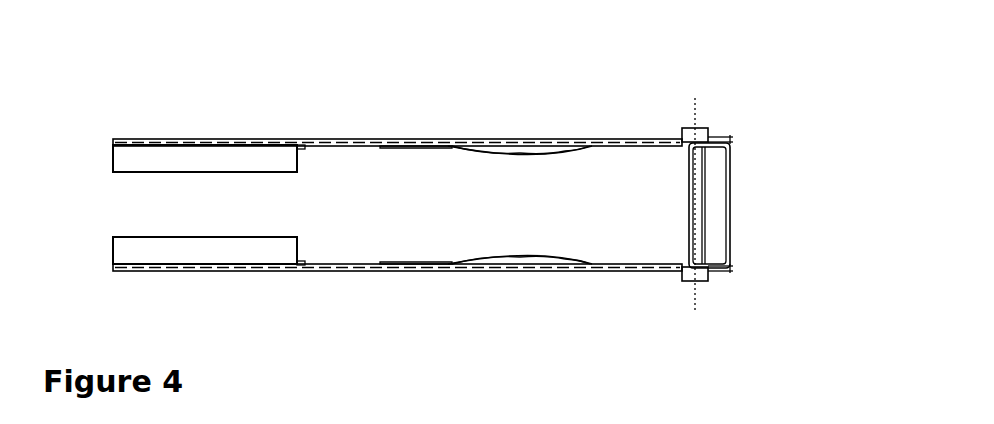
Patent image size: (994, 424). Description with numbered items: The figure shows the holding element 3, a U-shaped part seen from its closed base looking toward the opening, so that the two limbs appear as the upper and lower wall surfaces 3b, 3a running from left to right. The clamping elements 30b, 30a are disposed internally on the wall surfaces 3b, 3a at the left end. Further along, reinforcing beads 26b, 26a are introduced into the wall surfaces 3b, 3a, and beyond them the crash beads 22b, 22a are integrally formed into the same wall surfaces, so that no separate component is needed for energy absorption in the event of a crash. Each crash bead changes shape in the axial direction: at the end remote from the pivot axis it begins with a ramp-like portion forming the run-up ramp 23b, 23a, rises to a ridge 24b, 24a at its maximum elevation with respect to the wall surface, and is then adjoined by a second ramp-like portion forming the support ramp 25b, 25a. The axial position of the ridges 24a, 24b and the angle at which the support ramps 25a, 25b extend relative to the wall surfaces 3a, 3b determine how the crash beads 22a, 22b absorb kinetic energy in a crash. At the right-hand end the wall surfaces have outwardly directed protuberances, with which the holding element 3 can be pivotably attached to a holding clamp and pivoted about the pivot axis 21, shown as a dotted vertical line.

The holding element 3 is at (385, 82).
The wall surface 3a is at (317, 272).
The wall surface 3b is at (322, 140).
The pivot axis 21 is at (697, 110).
The crash bead 22a is at (523, 263).
The crash bead 22b is at (511, 141).
The run-up ramp 23a is at (470, 259).
The run-up ramp 23b is at (467, 152).
The ridge 24a is at (537, 258).
The ridge 24b is at (540, 157).
The support ramp 25a is at (580, 259).
The support ramp 25b is at (572, 152).
The reinforcing bead 26a is at (390, 272).
The reinforcing bead 26b is at (402, 140).
The clamping element 30a is at (195, 255).
The clamping element 30b is at (185, 163).